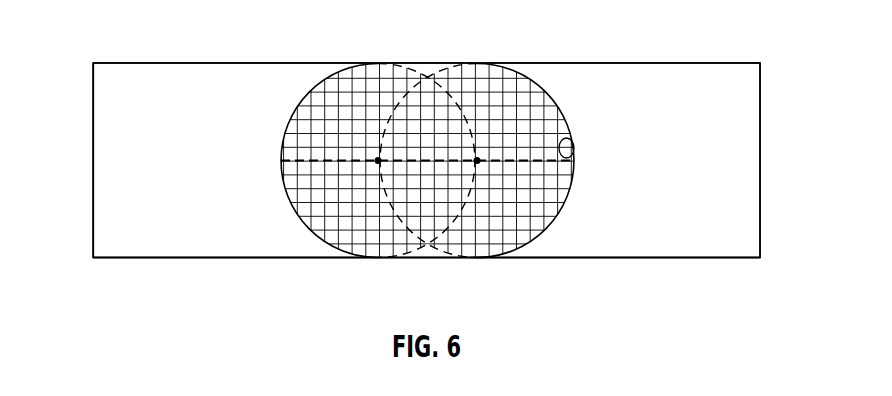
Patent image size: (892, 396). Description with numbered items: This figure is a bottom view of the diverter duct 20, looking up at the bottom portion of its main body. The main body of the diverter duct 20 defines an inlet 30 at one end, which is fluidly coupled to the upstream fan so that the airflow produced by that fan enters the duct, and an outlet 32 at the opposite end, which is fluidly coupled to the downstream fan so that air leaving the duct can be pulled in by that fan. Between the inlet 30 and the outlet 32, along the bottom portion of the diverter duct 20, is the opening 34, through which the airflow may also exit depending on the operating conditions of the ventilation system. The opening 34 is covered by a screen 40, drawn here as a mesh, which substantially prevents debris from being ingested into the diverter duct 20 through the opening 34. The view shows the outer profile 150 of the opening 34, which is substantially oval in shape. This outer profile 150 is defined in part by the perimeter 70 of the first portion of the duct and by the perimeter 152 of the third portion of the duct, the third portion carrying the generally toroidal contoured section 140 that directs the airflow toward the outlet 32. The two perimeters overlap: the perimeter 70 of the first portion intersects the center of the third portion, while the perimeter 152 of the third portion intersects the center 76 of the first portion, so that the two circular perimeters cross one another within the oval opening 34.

The diverter duct 20 is at (661, 281).
The inlet 30 is at (760, 93).
The outlet 32 is at (92, 102).
The opening 34 is at (499, 262).
The screen 40 is at (303, 152).
The perimeter of the first portion 70 is at (428, 72).
The center of the first portion 76 is at (477, 160).
The contoured section 140 is at (378, 160).
The outer profile 150 is at (573, 157).
The perimeter of the third portion 152 is at (479, 259).